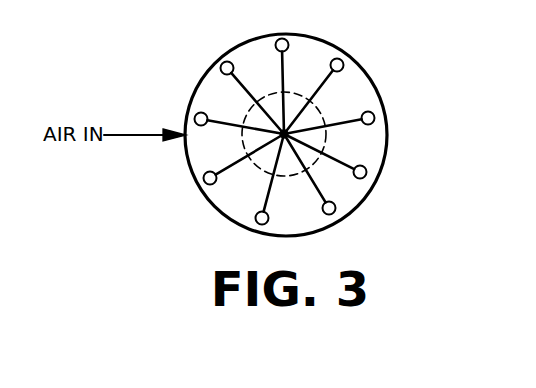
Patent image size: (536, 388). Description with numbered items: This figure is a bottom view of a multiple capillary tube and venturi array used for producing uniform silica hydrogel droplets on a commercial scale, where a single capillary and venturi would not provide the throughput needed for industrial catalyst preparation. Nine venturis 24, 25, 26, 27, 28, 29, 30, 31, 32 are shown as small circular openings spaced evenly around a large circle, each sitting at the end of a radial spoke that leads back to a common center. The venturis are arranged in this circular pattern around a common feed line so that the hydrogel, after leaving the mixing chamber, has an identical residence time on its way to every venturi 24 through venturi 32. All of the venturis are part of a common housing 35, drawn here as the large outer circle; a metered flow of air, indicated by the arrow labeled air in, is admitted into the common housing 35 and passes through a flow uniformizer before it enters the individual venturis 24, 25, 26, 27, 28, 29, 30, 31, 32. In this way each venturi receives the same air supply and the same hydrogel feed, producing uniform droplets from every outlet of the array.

The venturi 24 is at (189, 108).
The venturi 25 is at (201, 190).
The venturi 26 is at (263, 226).
The venturi 27 is at (335, 214).
The venturi 28 is at (381, 172).
The venturi 29 is at (383, 114).
The venturi 30 is at (343, 52).
The venturi 31 is at (283, 33).
The venturi 32 is at (220, 56).
The common housing 35 is at (366, 195).